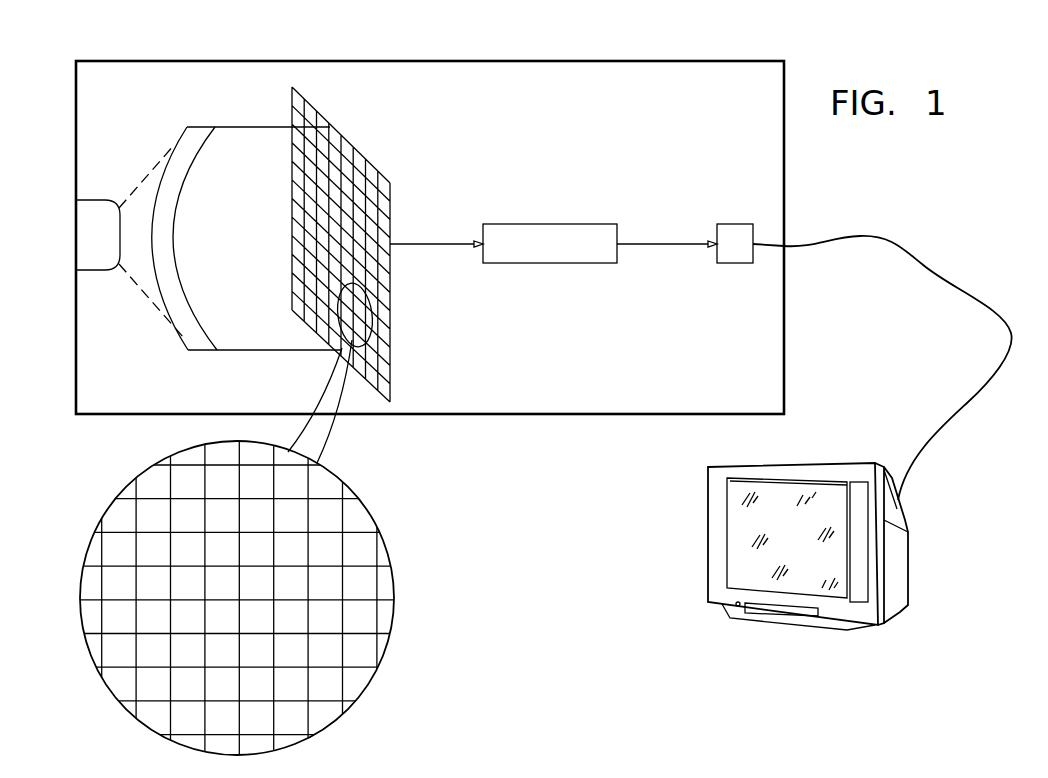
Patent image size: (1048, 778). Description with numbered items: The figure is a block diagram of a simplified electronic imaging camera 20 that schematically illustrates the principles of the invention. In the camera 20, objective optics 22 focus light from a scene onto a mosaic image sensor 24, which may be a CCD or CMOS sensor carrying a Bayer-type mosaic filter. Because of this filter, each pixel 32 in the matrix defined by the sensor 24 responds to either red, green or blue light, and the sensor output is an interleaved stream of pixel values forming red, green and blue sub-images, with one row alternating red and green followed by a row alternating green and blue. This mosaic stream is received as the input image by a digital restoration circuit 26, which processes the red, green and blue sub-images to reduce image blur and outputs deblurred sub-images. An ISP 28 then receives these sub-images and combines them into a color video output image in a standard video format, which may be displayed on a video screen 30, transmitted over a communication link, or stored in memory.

The electronic imaging camera 20 is at (680, 61).
The objective optics 22 is at (217, 122).
The mosaic image sensor 24 is at (352, 143).
The digital restoration circuit 26 is at (563, 224).
The ISP 28 is at (733, 224).
The video screen 30 is at (860, 470).
The pixel 32 is at (372, 640).